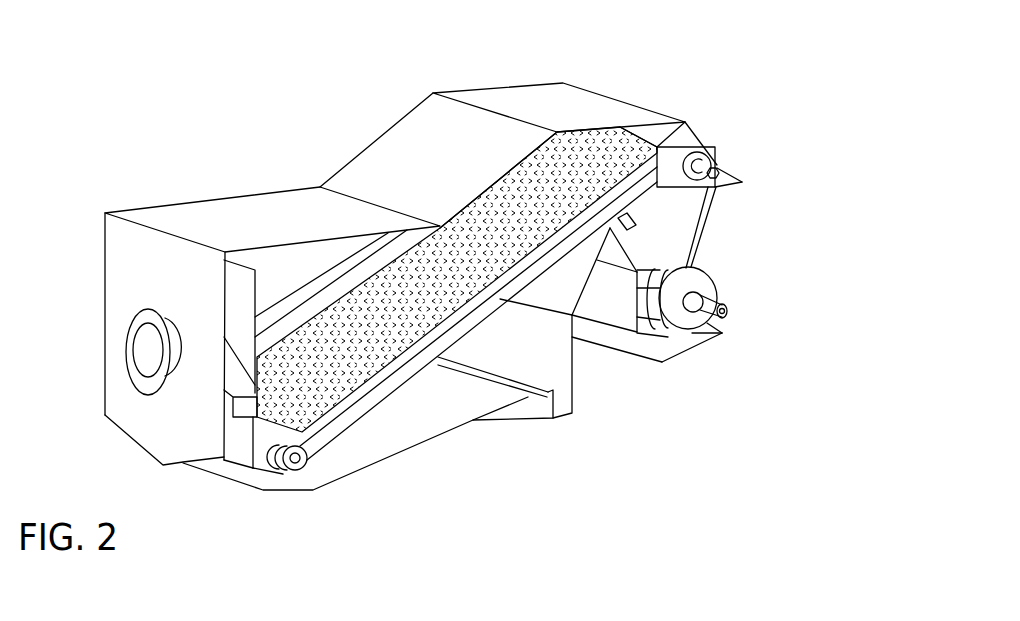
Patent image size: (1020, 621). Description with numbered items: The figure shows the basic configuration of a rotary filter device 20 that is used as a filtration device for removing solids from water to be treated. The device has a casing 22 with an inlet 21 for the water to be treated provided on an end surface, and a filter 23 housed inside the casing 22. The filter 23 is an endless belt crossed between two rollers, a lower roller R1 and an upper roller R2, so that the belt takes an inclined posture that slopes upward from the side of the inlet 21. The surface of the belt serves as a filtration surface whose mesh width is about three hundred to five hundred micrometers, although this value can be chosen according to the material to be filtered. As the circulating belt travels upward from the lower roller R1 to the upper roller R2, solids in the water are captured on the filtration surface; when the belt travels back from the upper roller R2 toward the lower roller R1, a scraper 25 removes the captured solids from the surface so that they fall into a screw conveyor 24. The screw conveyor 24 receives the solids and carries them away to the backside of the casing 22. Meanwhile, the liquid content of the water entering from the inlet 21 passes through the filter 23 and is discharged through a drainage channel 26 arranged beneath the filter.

The rotary filter device 20 is at (480, 68).
The inlet 21 is at (145, 350).
The casing 22 is at (217, 212).
The filter 23 is at (456, 293).
The screw conveyor 24 is at (700, 281).
The scraper 25 is at (633, 223).
The drainage channel 26 is at (574, 392).
The lower roller R1 is at (262, 452).
The upper roller R2 is at (667, 143).